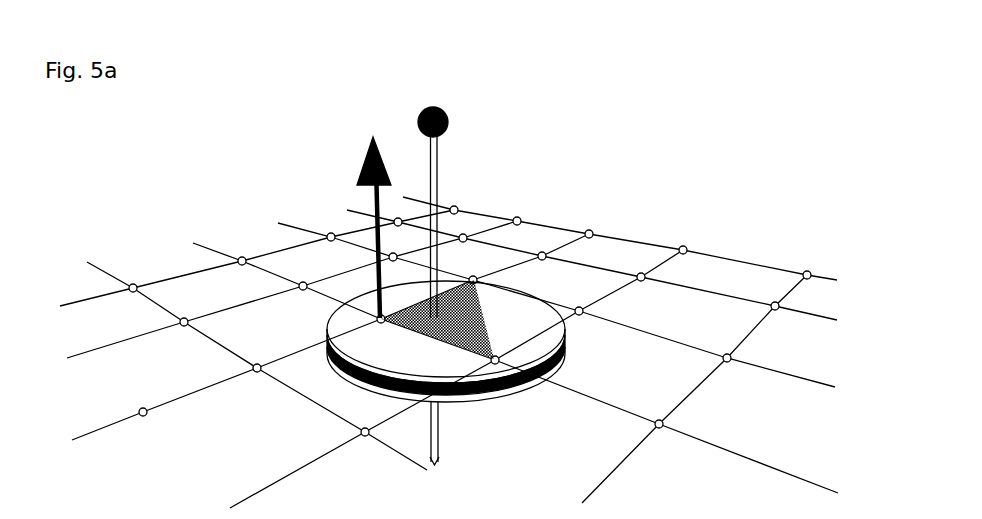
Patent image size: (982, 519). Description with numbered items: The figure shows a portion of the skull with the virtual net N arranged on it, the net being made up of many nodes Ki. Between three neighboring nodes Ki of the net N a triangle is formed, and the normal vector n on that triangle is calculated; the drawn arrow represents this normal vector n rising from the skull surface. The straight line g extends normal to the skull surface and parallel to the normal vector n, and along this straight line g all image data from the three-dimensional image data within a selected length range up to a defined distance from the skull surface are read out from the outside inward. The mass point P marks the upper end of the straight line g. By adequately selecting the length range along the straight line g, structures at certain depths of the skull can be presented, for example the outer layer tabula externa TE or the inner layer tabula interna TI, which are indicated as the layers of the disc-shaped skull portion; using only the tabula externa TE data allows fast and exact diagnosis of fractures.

The virtual net N is at (725, 275).
The node Ki is at (589, 234).
The tabula externa TE is at (362, 372).
The tabula interna TI is at (350, 374).
The disc / bottom plate DI is at (508, 396).
The straight line g is at (441, 300).
The pendulum mass point P is at (462, 117).
The normal vector n is at (374, 215).